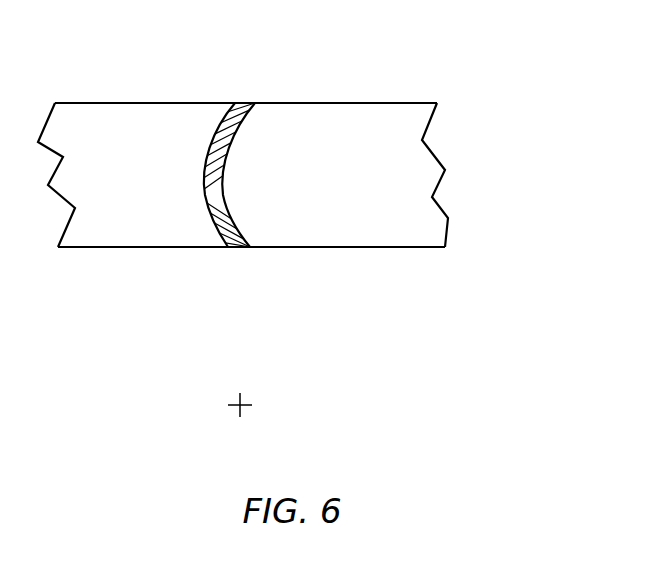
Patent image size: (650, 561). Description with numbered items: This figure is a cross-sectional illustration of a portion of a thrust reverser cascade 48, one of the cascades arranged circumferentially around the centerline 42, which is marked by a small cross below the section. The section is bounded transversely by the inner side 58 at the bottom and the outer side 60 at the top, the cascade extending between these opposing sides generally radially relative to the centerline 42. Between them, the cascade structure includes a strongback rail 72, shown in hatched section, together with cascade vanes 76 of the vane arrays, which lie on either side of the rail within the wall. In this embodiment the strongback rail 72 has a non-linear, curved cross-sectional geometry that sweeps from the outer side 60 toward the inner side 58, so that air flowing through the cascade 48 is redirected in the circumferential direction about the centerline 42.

The thrust reverser cascade 48 is at (457, 85).
The outer side 60 is at (398, 102).
The inner side 58 is at (428, 248).
The strongback rail 72 is at (236, 223).
The cascade vane 76 is at (109, 242).
The centerline 42 is at (239, 409).